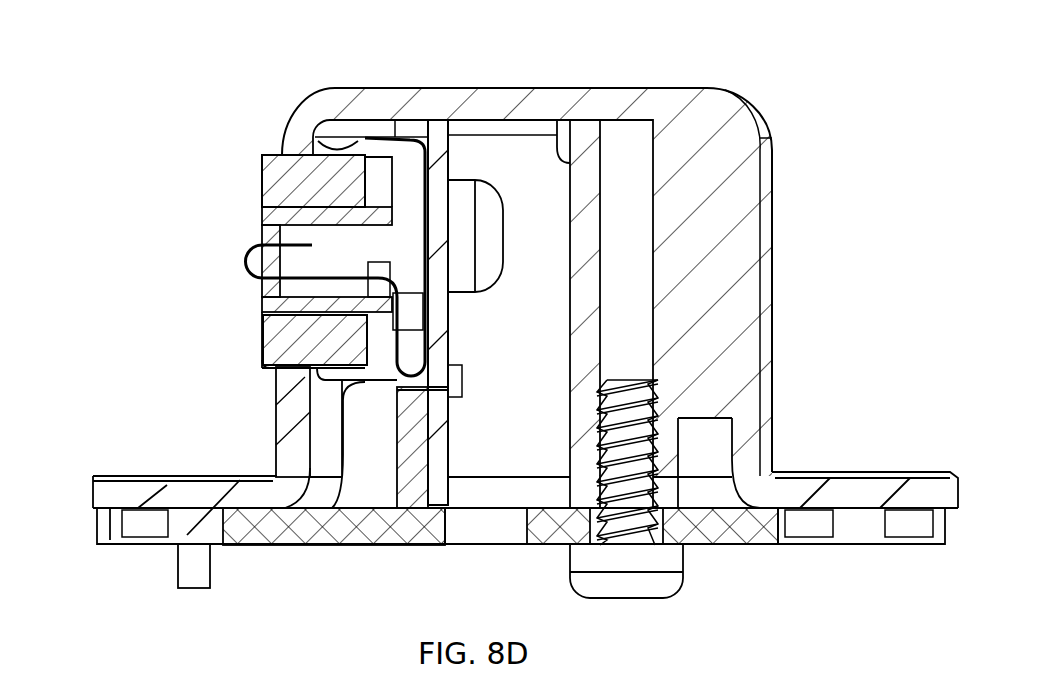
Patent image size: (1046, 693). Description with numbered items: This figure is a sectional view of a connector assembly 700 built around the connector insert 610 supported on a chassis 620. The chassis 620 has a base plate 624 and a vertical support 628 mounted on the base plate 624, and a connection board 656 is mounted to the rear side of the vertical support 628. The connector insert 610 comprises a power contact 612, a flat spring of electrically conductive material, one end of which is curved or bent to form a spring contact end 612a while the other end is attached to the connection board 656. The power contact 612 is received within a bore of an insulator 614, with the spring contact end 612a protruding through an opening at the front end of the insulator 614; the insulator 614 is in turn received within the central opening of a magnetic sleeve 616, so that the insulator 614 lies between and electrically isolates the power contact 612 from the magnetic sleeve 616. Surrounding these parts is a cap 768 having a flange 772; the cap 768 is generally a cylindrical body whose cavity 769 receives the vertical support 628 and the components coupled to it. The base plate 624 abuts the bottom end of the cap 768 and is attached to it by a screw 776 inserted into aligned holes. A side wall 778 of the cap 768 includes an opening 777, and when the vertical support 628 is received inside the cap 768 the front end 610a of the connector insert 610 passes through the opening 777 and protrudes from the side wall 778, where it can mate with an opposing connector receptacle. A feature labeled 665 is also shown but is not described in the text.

The connector assembly 700 is at (672, 80).
The cap 768 is at (777, 304).
The cavity 769 is at (557, 125).
The flange 772 is at (860, 496).
The chassis 620 is at (732, 549).
The base plate 624 is at (318, 552).
The vertical support 628 is at (415, 494).
The connection board 656 is at (440, 484).
The connector insert 610 is at (250, 180).
The front end of connector insert 610a is at (262, 208).
The power contact 612 is at (246, 263).
The spring contact end 612a is at (256, 246).
The insulator 614 is at (263, 319).
The magnetic sleeve 616 is at (272, 366).
The spring hook 665 is at (382, 142).
The screw 776 is at (632, 588).
The opening 777 is at (270, 370).
The side wall 778 is at (283, 150).